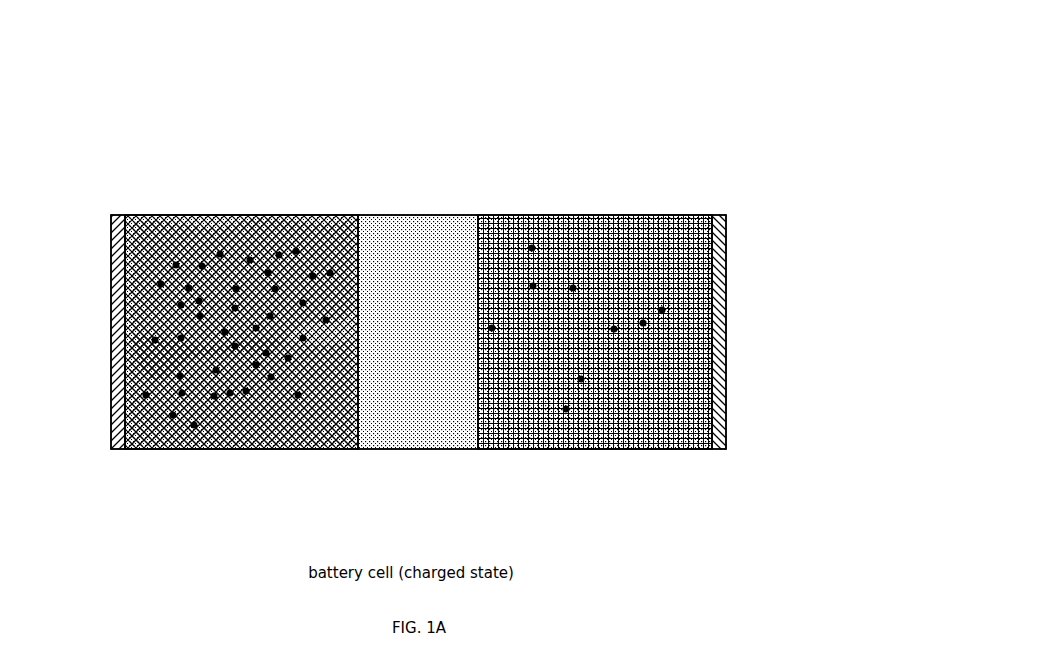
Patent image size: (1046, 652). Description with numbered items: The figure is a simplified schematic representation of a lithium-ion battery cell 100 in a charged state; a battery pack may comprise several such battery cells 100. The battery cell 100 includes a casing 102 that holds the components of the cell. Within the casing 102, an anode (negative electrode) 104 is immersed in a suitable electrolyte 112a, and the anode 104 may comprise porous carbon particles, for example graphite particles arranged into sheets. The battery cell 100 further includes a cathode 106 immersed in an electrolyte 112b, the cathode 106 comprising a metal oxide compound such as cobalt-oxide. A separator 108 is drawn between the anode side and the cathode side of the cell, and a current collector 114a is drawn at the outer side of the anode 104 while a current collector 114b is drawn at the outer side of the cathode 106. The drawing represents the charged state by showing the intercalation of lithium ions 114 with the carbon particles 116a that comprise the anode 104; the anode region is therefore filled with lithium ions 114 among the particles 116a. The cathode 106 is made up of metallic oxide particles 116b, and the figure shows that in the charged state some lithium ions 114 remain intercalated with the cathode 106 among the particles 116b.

The battery cell 100 is at (645, 40).
The casing 102 is at (418, 441).
The anode (negative electrode) 104 is at (350, 207).
The cathode (positive electrode) 106 is at (703, 207).
The separator 108 is at (397, 218).
The electrolyte 112a is at (342, 255).
The electrolyte 112b is at (478, 218).
The lithium ions 114 is at (186, 417).
The current collector 114a is at (117, 208).
The current collector 114b is at (713, 210).
The carbon particles 116a is at (310, 412).
The metallic oxide particles 116b is at (560, 440).